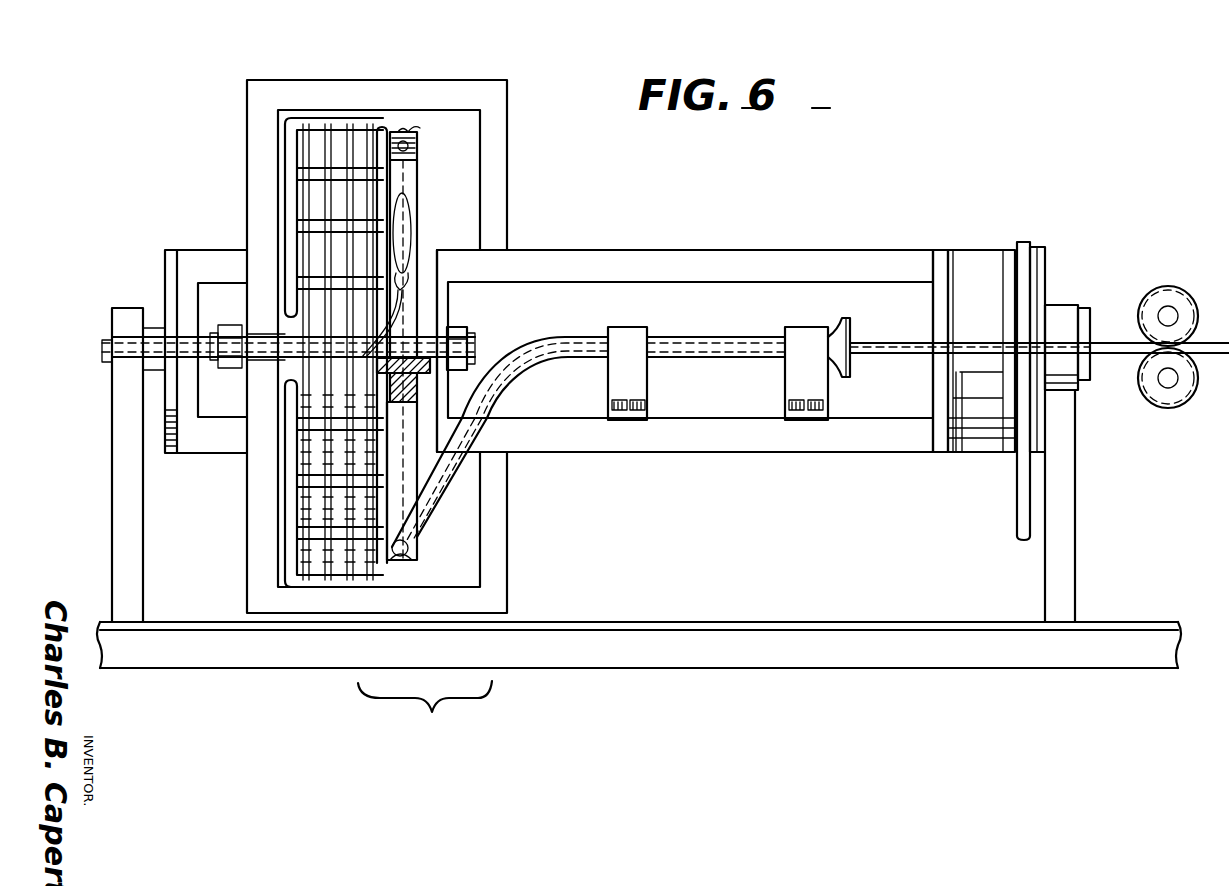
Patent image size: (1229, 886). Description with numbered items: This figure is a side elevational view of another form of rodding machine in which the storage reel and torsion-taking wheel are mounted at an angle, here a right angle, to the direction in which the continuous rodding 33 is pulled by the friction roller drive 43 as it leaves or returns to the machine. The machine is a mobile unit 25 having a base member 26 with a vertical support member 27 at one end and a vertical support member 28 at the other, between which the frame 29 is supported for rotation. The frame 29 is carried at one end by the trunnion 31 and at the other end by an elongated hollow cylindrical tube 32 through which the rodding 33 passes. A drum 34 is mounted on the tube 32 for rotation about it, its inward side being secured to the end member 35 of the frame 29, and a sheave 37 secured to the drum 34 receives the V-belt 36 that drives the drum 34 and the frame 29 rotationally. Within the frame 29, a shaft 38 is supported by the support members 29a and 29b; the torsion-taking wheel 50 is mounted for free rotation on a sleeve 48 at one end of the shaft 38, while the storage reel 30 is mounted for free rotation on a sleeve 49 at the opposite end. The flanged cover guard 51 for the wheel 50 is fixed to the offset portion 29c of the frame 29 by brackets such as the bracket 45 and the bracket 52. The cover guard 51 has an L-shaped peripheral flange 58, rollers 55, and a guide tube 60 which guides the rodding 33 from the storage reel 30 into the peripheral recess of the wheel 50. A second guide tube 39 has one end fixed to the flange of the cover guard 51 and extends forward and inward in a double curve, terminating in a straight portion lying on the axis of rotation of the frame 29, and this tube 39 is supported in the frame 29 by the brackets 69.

The mobile unit 25 is at (425, 716).
The base member 26 is at (560, 633).
The vertical support member 27 is at (130, 532).
The vertical support member 28 is at (1065, 515).
The frame 29 is at (706, 258).
The support member 29a is at (238, 390).
The support member 29b is at (443, 306).
The offset portion of frame 29c is at (500, 100).
The rodding reel 30 is at (303, 112).
The trunnion 31 is at (108, 348).
The hollow cylindrical tube 32 is at (1082, 310).
The continuous rodding 33 is at (884, 341).
The drum 34 is at (972, 255).
The end member 35 is at (938, 250).
The V-belt 36 is at (1018, 487).
The sheave 37 is at (1035, 250).
The shaft 38 is at (467, 348).
The second guide tube 39 is at (575, 337).
The friction roller drive 43 is at (1168, 292).
The bracket 45 is at (420, 120).
The sleeve 48 is at (408, 224).
The sleeve 49 is at (267, 332).
The torsion-taking wheel 50 is at (414, 163).
The flanged cover guard 51 is at (418, 182).
The bracket 52 is at (398, 573).
The rollers 55 is at (420, 127).
The L-shaped peripheral flange 58 is at (390, 120).
The guide tube 60 is at (425, 330).
The brackets 69 is at (792, 377).